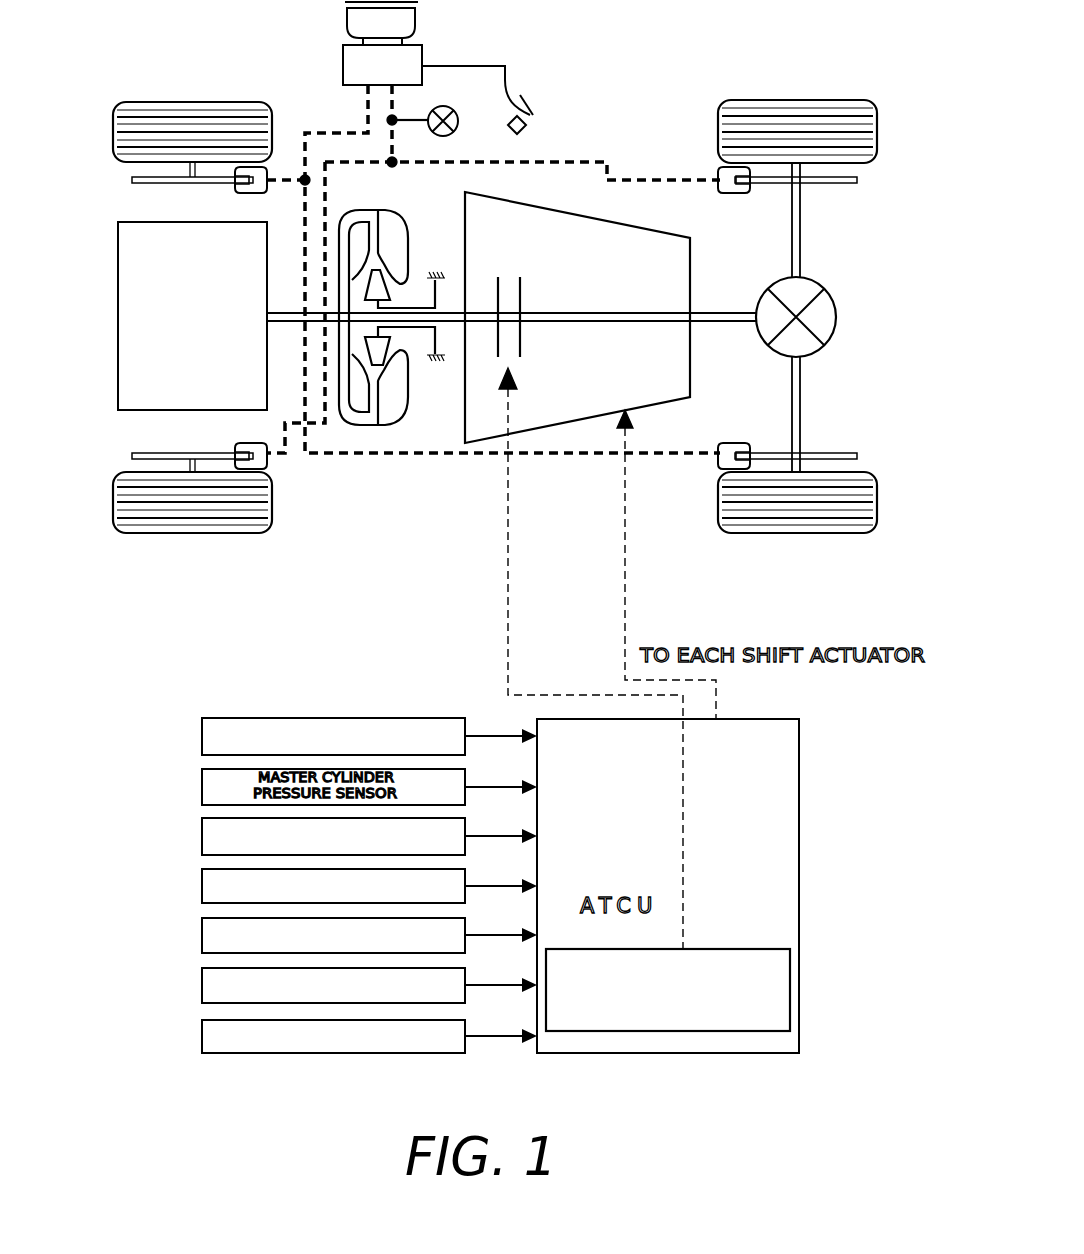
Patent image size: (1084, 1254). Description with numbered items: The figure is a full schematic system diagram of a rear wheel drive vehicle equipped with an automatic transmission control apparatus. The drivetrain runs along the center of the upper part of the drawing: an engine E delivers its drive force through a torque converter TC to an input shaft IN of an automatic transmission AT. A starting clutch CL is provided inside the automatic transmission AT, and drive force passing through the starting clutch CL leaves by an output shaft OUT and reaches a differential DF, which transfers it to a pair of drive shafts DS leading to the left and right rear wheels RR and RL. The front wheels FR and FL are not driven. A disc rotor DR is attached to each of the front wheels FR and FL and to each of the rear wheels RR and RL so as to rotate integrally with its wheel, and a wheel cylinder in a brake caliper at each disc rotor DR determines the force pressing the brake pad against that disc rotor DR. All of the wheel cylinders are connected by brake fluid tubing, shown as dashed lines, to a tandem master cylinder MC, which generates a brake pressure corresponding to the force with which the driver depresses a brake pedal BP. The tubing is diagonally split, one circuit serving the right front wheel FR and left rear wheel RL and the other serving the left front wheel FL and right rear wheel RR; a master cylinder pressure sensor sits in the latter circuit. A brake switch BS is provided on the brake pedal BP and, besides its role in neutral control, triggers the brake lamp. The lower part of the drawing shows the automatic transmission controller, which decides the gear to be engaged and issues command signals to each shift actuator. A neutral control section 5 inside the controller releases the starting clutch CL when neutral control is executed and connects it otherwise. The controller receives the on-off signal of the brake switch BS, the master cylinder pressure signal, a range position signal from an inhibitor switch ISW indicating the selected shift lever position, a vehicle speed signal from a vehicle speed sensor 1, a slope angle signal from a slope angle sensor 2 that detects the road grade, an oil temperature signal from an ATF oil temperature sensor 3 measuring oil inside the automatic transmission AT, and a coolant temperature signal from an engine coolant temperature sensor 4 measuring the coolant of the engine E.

The right front wheel FR is at (178, 101).
The right rear wheel RR is at (768, 99).
The left front wheel FL is at (142, 534).
The left rear wheel RL is at (770, 534).
The disc rotor DR is at (138, 185).
The master cylinder MC is at (343, 55).
The brake pedal BP is at (507, 83).
The brake switch BS is at (527, 127).
The engine E is at (118, 300).
The torque converter TC is at (396, 214).
The automatic transmission AT is at (615, 222).
The input shaft IN is at (478, 311).
The starting clutch CL is at (507, 287).
The output shaft OUT is at (720, 312).
The differential DF is at (837, 310).
The drive shaft DS is at (801, 252).
The inhibitor switch ISW is at (202, 833).
The vehicle speed sensor 1 is at (202, 884).
The slope angle sensor 2 is at (202, 934).
The ATF oil temperature sensor 3 is at (202, 984).
The engine coolant temperature sensor 4 is at (202, 1036).
The neutral control section 5 is at (748, 949).